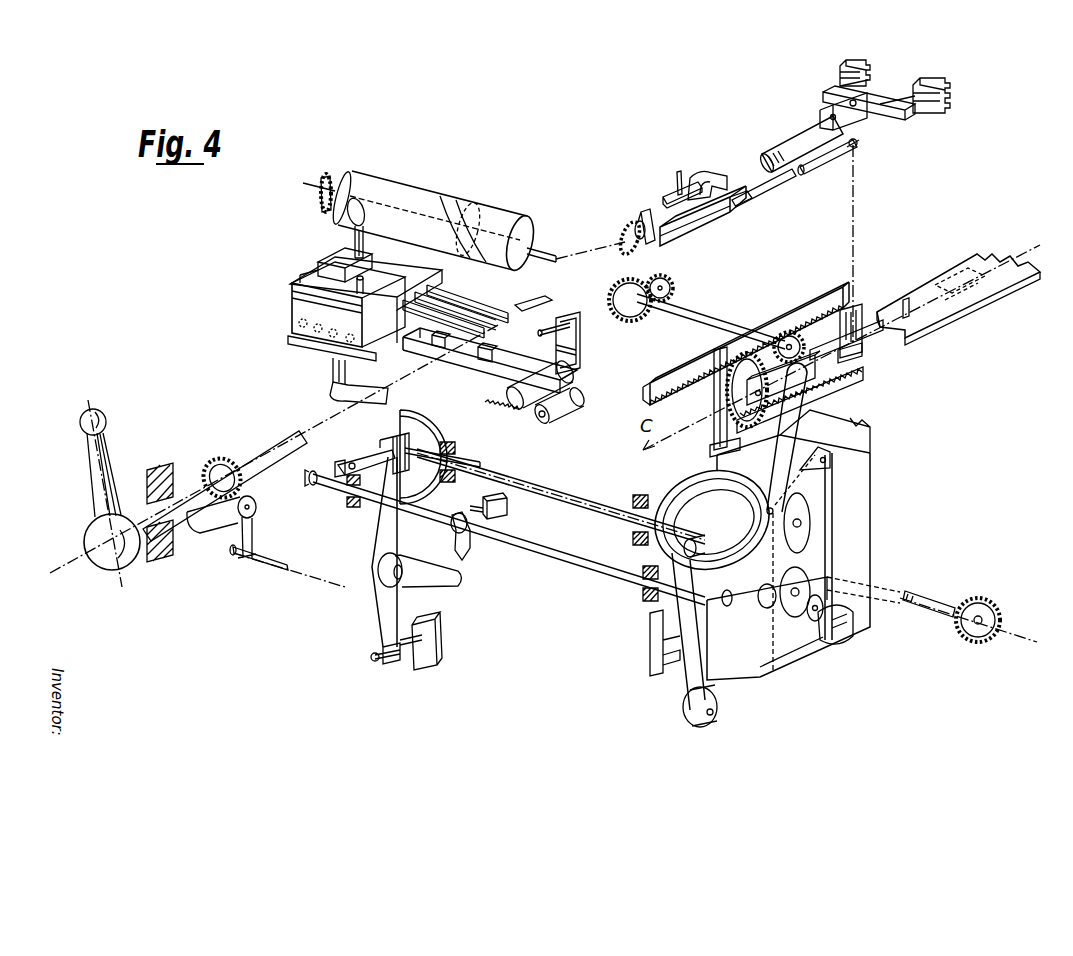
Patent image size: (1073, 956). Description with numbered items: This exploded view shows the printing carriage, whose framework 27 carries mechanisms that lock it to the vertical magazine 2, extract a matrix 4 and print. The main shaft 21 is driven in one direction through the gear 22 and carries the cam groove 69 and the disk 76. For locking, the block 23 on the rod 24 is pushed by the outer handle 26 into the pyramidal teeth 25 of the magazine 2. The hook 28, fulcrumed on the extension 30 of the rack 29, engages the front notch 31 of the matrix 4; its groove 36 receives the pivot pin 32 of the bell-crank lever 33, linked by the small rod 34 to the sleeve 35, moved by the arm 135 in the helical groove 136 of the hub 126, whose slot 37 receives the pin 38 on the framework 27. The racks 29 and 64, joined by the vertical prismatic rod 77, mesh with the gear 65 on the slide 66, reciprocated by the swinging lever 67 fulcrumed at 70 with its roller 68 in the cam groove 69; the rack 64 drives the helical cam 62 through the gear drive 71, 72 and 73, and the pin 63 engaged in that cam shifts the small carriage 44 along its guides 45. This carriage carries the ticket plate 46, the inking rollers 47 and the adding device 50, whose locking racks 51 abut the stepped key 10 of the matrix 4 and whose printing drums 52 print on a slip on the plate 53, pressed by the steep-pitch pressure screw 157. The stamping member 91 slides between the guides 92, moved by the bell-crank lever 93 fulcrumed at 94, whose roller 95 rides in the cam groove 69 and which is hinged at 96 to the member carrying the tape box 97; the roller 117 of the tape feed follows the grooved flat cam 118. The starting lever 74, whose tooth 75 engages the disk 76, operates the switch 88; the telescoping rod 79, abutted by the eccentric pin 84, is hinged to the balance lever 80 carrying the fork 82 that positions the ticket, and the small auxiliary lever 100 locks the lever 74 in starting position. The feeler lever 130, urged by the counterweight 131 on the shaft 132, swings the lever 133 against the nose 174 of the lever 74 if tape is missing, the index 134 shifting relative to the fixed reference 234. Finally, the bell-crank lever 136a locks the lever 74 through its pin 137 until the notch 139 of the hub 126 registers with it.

The magazine 2 is at (950, 92).
The matrix 4 is at (1004, 284).
The stepped projection 10 is at (955, 298).
The main shaft 21 is at (625, 492).
The gear 22 is at (986, 612).
The block 23 is at (906, 121).
The rod 24 is at (788, 152).
The pyramidal teeth 25 is at (838, 80).
The outer handle 26 is at (96, 491).
The framework 27 is at (157, 470).
The hook 28 is at (864, 347).
The rack 29 is at (848, 391).
The extension 30 is at (840, 357).
The front notch 31 is at (907, 302).
The pivot pin 32 is at (860, 128).
The bell-crank lever 33 is at (855, 148).
The small rod 34 is at (815, 170).
The sleeve 35 is at (712, 176).
The groove 36 is at (858, 325).
The slot 37 is at (668, 196).
The pin 38 is at (679, 171).
The small carriage 44 is at (292, 303).
The guides 45 is at (322, 264).
The small plate 46 is at (462, 367).
The inking rollers 47 is at (560, 393).
The adding device 50 is at (388, 268).
The controlling and locking racks 51 is at (457, 301).
The printing drums 52 is at (299, 324).
The plate 53 is at (322, 348).
The cam 62 is at (362, 182).
The pin 63 is at (354, 240).
The rack 64 is at (812, 296).
The gear 65 is at (745, 390).
The slide 66 is at (758, 378).
The swinging lever 67 is at (790, 480).
The roller 68 is at (774, 511).
The cam groove 69 is at (684, 501).
The fulcrum 70 is at (770, 602).
The gear 71 is at (790, 338).
The gear 72 is at (640, 318).
The gear 73 is at (665, 288).
The lever 74 is at (383, 605).
The tooth 75 is at (396, 449).
The disk 76 is at (424, 488).
The vertical prismatic rod 77 is at (718, 432).
The telescoping rod 79 is at (492, 408).
The balance lever 80 is at (582, 355).
The fork 82 is at (548, 301).
The eccentric pin 84 is at (472, 456).
The switch 88 is at (410, 656).
The stamping member 91 is at (871, 466).
The guides 92 is at (871, 438).
The bell-crank lever 93 is at (745, 682).
The fulcrum 94 is at (683, 705).
The roller 95 is at (684, 546).
The hinge 96 is at (852, 630).
The box 97 is at (812, 547).
The small auxiliary lever 100 is at (373, 455).
The roller 117 is at (639, 662).
The grooved flat cam 118 is at (660, 627).
The hub 126 is at (655, 210).
The feeler lever 130 is at (728, 606).
The adjustable counterweight 131 is at (508, 508).
The shaft 132 is at (588, 567).
The lever 133 is at (471, 548).
The index 134 is at (313, 487).
The arm 135 is at (697, 218).
The helical groove 136 is at (642, 218).
The bell-crank lever 136a is at (232, 528).
The pin 137 is at (368, 484).
The notch 139 is at (161, 560).
The steep-pitch pressure screw 157 is at (331, 379).
The nose 174 is at (440, 584).
The fixed reference 234 is at (336, 466).